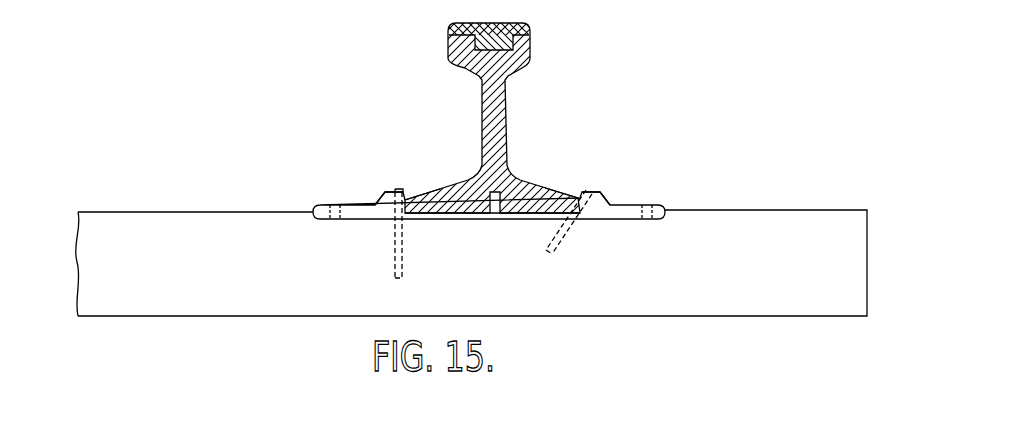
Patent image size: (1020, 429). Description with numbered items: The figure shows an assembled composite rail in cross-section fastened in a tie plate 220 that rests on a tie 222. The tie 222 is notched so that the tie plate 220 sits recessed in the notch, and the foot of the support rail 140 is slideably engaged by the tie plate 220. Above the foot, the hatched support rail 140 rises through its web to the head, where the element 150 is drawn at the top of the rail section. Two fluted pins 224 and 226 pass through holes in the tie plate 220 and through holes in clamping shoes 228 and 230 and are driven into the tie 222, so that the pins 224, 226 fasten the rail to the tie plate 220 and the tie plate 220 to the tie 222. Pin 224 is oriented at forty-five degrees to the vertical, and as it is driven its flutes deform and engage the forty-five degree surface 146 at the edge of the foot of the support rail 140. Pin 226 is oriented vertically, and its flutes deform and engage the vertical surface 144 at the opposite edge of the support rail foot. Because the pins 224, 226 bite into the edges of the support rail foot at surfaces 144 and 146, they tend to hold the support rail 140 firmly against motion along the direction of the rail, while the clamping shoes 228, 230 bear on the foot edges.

The support rail 140 is at (497, 115).
The rail head insert 150 is at (517, 23).
The vertical surface 144 is at (409, 195).
The 45° surface 146 is at (581, 163).
The tie plate 220 is at (636, 205).
The tie 222 is at (817, 218).
The fluted pin 224 is at (562, 243).
The fluted pin 226 is at (395, 263).
The clamping shoe 228 is at (600, 192).
The clamping shoe 230 is at (387, 193).